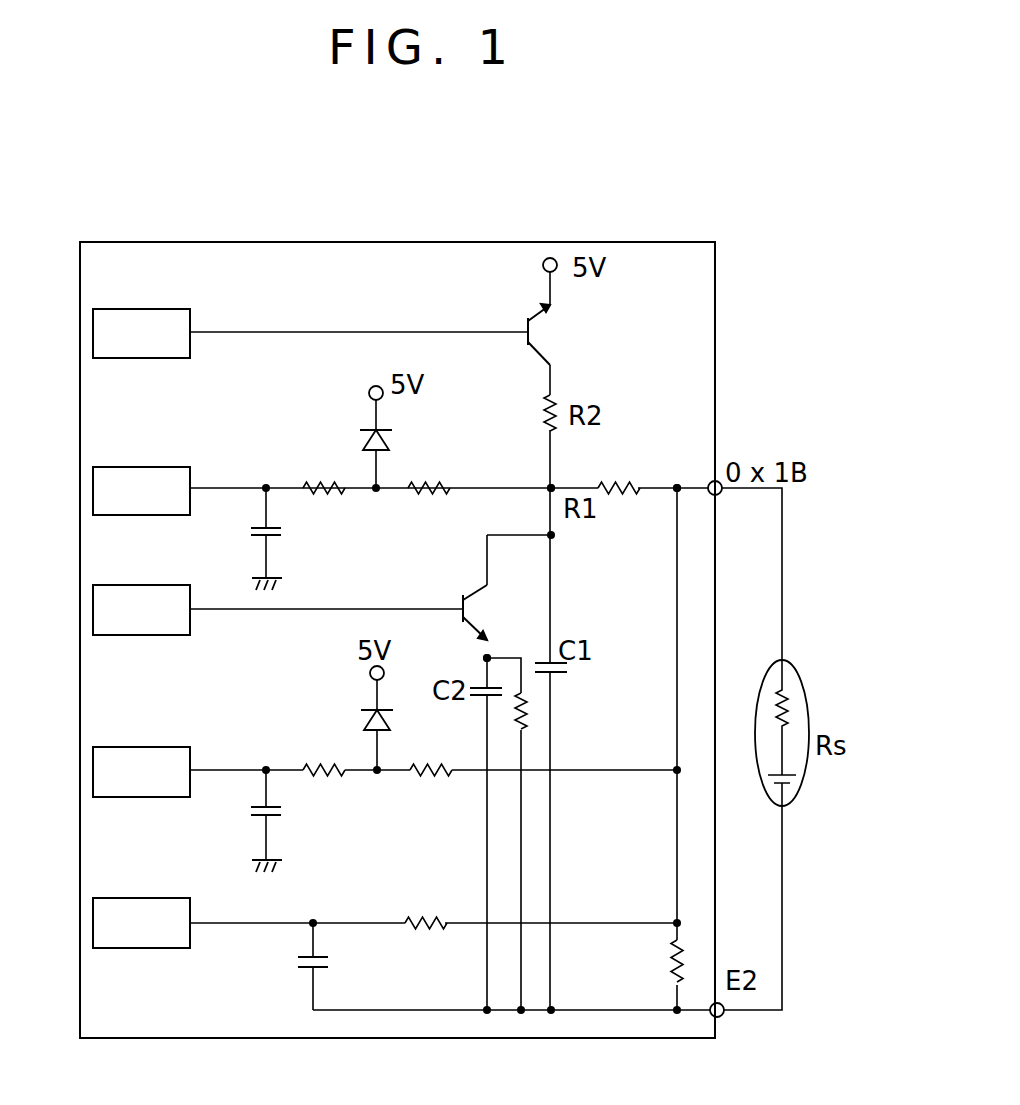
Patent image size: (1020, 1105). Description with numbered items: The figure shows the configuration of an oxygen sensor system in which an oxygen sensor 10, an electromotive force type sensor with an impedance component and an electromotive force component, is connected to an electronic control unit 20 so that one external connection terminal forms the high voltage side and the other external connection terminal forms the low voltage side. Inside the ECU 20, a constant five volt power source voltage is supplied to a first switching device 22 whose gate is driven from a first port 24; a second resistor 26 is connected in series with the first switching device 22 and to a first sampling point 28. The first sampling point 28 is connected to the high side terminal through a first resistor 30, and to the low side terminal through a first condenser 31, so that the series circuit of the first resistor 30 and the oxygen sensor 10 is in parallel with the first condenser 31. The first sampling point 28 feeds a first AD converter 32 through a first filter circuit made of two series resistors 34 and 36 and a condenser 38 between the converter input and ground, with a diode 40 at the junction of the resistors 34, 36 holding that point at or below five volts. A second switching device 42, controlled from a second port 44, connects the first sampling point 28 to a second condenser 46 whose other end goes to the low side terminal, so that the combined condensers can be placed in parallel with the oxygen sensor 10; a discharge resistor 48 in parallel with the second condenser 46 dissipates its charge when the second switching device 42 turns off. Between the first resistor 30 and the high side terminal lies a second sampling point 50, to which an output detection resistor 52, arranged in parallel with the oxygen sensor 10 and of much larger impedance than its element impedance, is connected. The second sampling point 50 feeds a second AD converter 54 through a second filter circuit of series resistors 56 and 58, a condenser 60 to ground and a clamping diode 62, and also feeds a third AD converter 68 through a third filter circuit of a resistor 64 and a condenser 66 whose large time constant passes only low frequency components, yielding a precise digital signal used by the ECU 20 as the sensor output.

The oxygen sensor 10 is at (788, 662).
The electronic control unit 20 is at (715, 355).
The first switching device 22 is at (545, 322).
The first port 24 is at (165, 309).
The second resistor 26 is at (548, 398).
The first sampling point 28 is at (548, 486).
The first resistor 30 is at (618, 482).
The first condenser 31 is at (560, 678).
The first AD converter 32 is at (165, 467).
The resistor 34 is at (422, 497).
The resistor 36 is at (325, 482).
The condenser 38 is at (285, 528).
The diode 40 is at (392, 440).
The second switching device 42 is at (475, 590).
The second port 44 is at (165, 585).
The second condenser 46 is at (483, 656).
The discharge resistor 48 is at (520, 690).
The second sampling point 50 is at (675, 482).
The output detection resistor 52 is at (672, 958).
The second AD converter 54 is at (165, 747).
The resistor 56 is at (430, 778).
The resistor 58 is at (325, 765).
The condenser 60 is at (285, 810).
The diode 62 is at (393, 722).
The resistor 64 is at (430, 930).
The condenser 66 is at (330, 960).
The third AD converter 68 is at (165, 898).